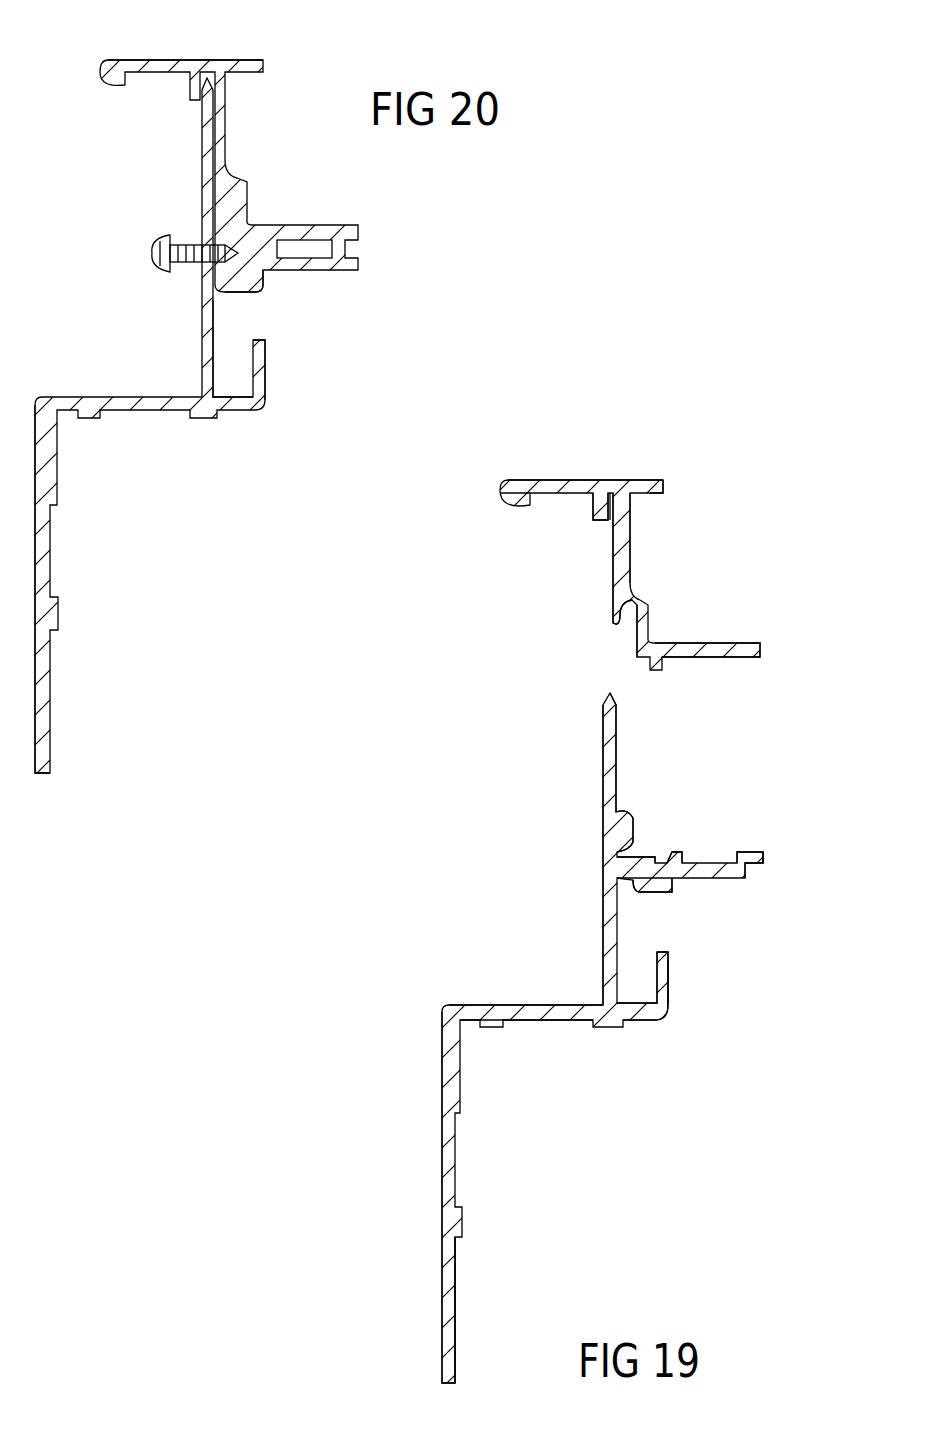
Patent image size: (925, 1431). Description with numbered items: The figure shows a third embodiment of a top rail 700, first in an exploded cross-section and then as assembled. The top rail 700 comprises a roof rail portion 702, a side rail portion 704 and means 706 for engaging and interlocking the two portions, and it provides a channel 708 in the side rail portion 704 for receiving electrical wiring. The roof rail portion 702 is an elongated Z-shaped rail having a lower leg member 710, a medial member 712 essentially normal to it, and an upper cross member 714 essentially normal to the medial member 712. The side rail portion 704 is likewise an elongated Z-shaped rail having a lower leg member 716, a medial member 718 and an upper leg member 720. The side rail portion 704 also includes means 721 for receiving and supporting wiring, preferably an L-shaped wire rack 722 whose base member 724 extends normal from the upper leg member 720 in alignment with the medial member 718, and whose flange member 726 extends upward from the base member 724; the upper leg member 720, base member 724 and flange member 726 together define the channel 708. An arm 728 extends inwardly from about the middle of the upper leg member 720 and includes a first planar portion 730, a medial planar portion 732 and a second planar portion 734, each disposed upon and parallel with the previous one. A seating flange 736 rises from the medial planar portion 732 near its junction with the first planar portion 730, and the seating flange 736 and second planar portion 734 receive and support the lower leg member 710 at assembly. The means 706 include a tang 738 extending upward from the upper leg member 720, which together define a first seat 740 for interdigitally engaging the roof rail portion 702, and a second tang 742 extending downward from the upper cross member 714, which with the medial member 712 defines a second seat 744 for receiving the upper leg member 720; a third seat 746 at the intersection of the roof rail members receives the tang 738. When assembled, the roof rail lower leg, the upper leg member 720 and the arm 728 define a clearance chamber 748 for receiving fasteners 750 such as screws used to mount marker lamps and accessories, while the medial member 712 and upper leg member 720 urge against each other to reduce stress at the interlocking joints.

In FIG. 19, the top rail 700 is at (793, 623).
In FIG. 20, the top rail 700 is at (402, 210).
In FIG. 19, the roof rail portion 702 is at (558, 480).
In FIG. 20, the roof rail portion 702 is at (122, 58).
In FIG. 19, the side rail portion 704 is at (441, 1188).
In FIG. 20, the side rail portion 704 is at (36, 553).
In FIG. 19, the means for engaging and interlocking 706 is at (618, 645).
In FIG. 19, the channel 708 is at (640, 966).
In FIG. 20, the channel 708 is at (243, 330).
In FIG. 19, the lower leg member 710 is at (705, 643).
In FIG. 19, the medial member 712 is at (632, 535).
In FIG. 19, the upper cross member 714 is at (645, 480).
In FIG. 19, the lower leg member 716 is at (456, 1262).
In FIG. 19, the medial member 718 is at (560, 1022).
In FIG. 19, the upper leg member 720 is at (603, 752).
In FIG. 19, the means for receiving and supporting electrical wiring 721 is at (672, 976).
In FIG. 20, the means for receiving and supporting electrical wiring 721 is at (268, 348).
In FIG. 19, the wire rack 722 is at (670, 1002).
In FIG. 19, the base member 724 is at (640, 1023).
In FIG. 19, the flange member 726 is at (672, 953).
In FIG. 19, the arm 728 is at (720, 860).
In FIG. 19, the first planar portion 730 is at (648, 877).
In FIG. 19, the medial planar portion 732 is at (728, 882).
In FIG. 19, the second planar portion 734 is at (766, 848).
In FIG. 19, the seating flange 736 is at (678, 850).
In FIG. 19, the tang 738 is at (640, 858).
In FIG. 19, the first seat 740 is at (627, 802).
In FIG. 19, the second tang 742 is at (592, 512).
In FIG. 19, the second seat 744 is at (607, 525).
In FIG. 19, the third seat 746 is at (620, 622).
In FIG. 20, the clearance chamber 748 is at (214, 248).
In FIG. 20, the fasteners 750 is at (150, 251).